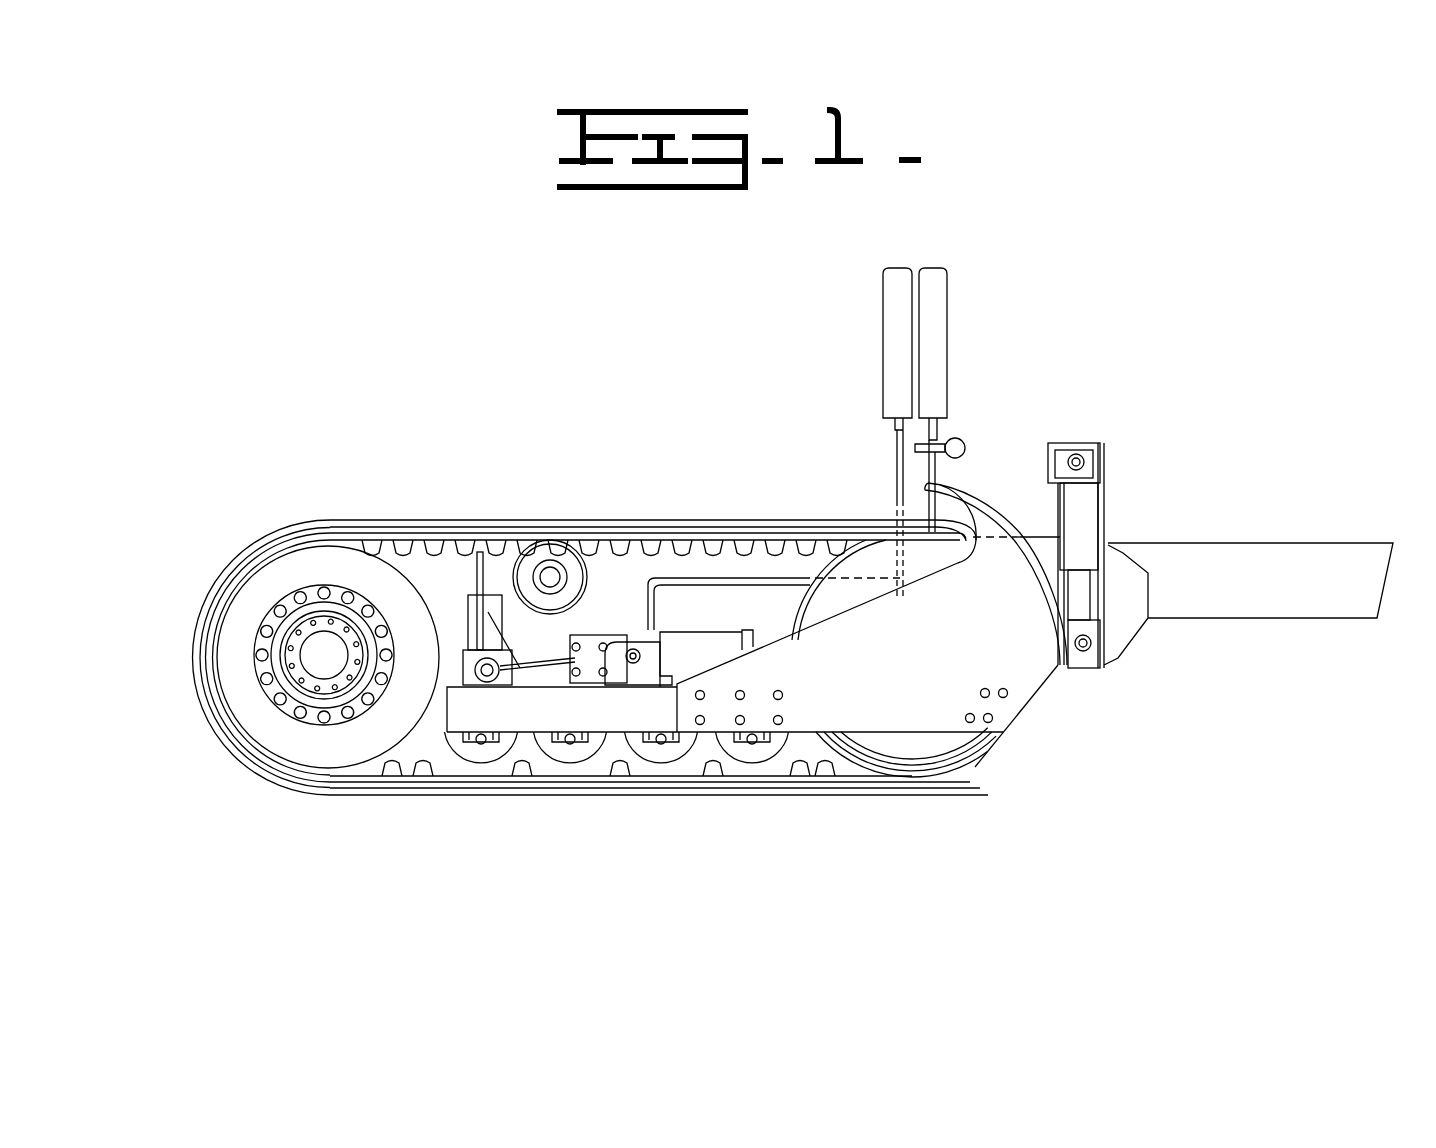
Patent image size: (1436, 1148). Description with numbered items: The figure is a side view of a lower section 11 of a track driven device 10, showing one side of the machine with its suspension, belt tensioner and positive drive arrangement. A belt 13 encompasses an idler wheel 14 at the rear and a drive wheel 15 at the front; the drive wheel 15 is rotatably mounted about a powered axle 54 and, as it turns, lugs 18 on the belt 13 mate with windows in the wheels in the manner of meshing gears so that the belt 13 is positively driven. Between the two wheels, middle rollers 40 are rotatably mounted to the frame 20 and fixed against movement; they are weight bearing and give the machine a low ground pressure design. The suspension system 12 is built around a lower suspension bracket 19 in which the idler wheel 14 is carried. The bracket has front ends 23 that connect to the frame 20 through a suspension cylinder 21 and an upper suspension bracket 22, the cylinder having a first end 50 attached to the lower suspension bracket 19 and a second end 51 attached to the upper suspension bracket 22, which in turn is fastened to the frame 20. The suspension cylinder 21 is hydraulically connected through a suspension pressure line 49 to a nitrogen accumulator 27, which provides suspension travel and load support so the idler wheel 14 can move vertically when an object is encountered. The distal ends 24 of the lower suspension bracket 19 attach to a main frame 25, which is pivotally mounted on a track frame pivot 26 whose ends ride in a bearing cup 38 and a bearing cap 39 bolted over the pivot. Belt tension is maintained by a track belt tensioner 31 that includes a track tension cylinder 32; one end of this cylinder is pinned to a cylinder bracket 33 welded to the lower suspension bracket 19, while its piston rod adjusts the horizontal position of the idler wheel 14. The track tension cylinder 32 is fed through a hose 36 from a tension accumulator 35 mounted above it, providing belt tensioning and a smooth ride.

The track driven device 10 is at (296, 455).
The lower section 11 is at (324, 410).
The suspension system 12 is at (997, 819).
The belt 13 is at (278, 795).
The idler wheel 14 is at (980, 750).
The drive wheel 15 is at (243, 600).
The lug 18 is at (840, 522).
The lower suspension bracket 19 is at (990, 520).
The frame 20 is at (1185, 552).
The suspension cylinder 21 is at (1098, 500).
The upper suspension bracket 22 is at (1105, 540).
The front end 23 is at (1134, 700).
The distal end 24 is at (709, 766).
The main frame 25 is at (527, 745).
The track frame pivot 26 is at (443, 772).
The accumulator 27 is at (933, 288).
The track belt tensioner 31 is at (749, 591).
The track tension cylinder 32 is at (716, 610).
The cylinder bracket 33 is at (614, 636).
The tension accumulator 35 is at (893, 318).
The hose 36 is at (668, 578).
The bearing cup 38 is at (530, 626).
The bearing cap 39 is at (481, 552).
The middle roller 40 is at (484, 766).
The suspension pressure line 49 is at (935, 468).
The first end 50 is at (1100, 640).
The second end 51 is at (1080, 448).
The powered axle 54 is at (318, 648).